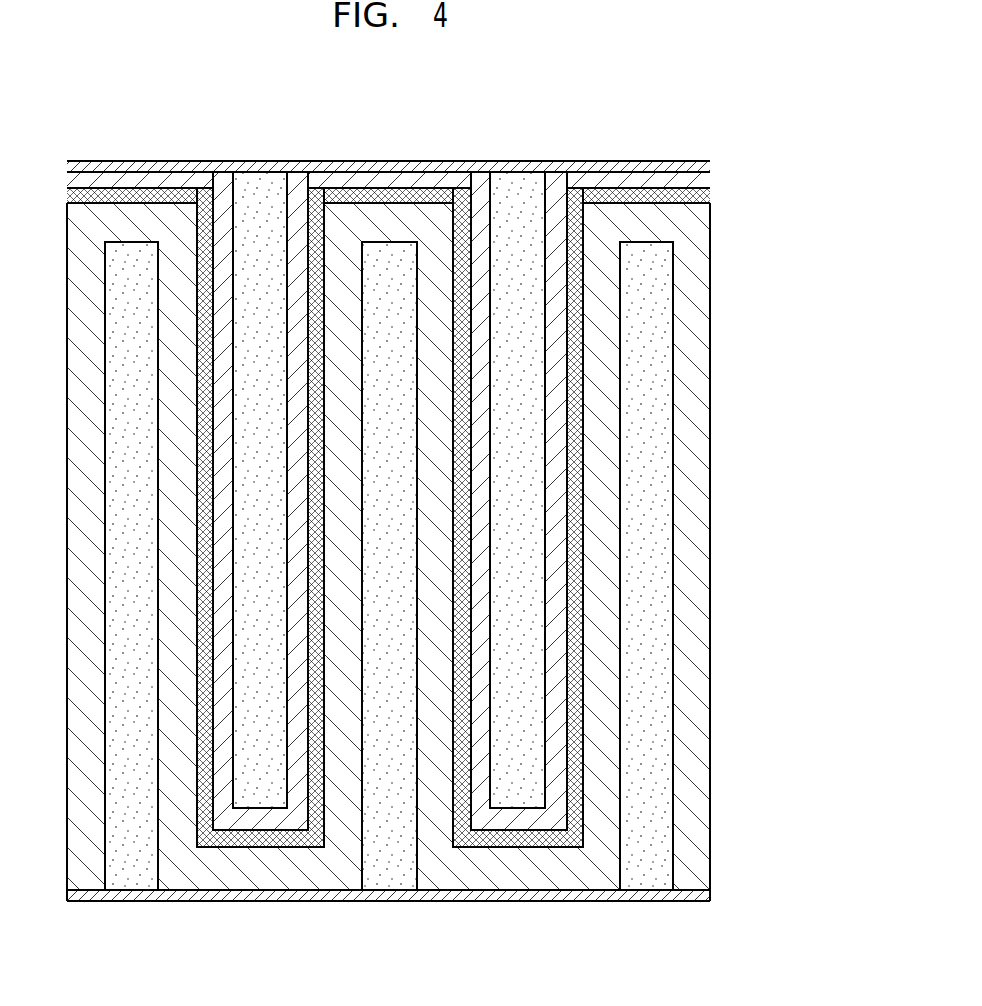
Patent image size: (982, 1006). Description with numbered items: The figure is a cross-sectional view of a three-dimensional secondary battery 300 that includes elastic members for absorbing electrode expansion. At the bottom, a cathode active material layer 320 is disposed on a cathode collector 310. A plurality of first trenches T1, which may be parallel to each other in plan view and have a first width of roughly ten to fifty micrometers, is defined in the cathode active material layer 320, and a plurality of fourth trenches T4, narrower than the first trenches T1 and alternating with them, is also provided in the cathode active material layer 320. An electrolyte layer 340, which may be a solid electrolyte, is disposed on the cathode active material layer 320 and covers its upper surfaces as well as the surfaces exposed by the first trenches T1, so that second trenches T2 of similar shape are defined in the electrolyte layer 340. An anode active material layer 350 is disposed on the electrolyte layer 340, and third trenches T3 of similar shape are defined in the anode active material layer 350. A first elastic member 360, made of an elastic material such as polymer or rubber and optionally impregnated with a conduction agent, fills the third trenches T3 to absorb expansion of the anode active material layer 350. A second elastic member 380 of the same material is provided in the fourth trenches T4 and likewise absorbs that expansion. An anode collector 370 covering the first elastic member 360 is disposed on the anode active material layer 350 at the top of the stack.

The 3D secondary battery 300 is at (703, 135).
The cathode collector 310 is at (710, 894).
The cathode active material layer 320 is at (697, 763).
The electrolyte layer 340 is at (712, 198).
The anode active material layer 350 is at (712, 180).
The first elastic member 360 is at (520, 795).
The anode collector 370 is at (712, 165).
The second elastic member 380 is at (389, 865).
The first trench T1 is at (583, 565).
The second trench T2 is at (567, 500).
The third trench T3 is at (545, 432).
The fourth trench T4 is at (362, 837).